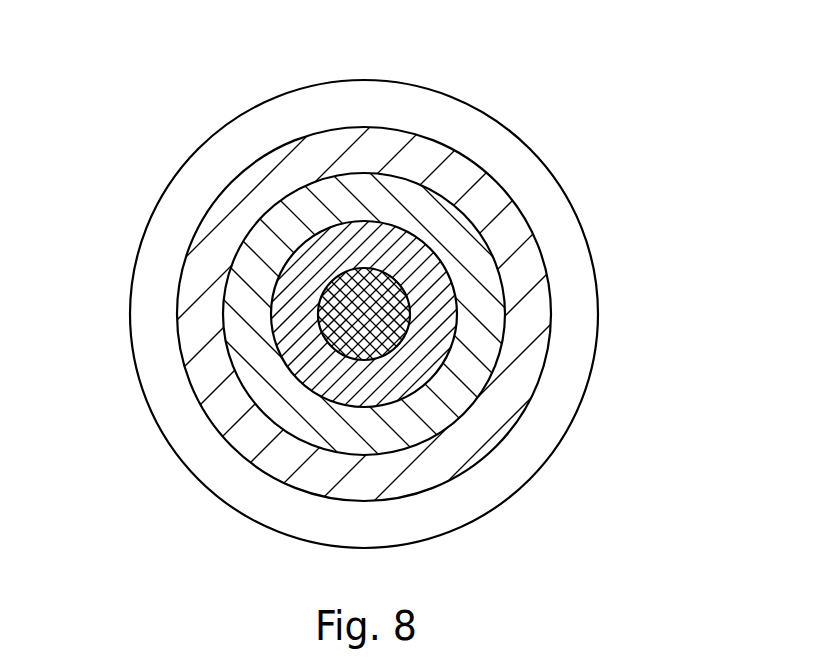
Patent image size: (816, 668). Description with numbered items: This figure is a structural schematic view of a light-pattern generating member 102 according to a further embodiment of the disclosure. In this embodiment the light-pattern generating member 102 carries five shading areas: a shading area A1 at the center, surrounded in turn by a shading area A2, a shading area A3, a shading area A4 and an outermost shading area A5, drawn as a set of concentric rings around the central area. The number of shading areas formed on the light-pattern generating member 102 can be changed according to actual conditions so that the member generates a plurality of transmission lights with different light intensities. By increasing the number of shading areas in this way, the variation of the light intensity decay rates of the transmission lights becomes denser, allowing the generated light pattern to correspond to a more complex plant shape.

The light-pattern generating member 102 is at (97, 62).
The shading area A1 is at (366, 259).
The shading area A2 is at (410, 230).
The shading area A3 is at (472, 221).
The shading area A4 is at (548, 271).
The shading area A5 is at (582, 410).